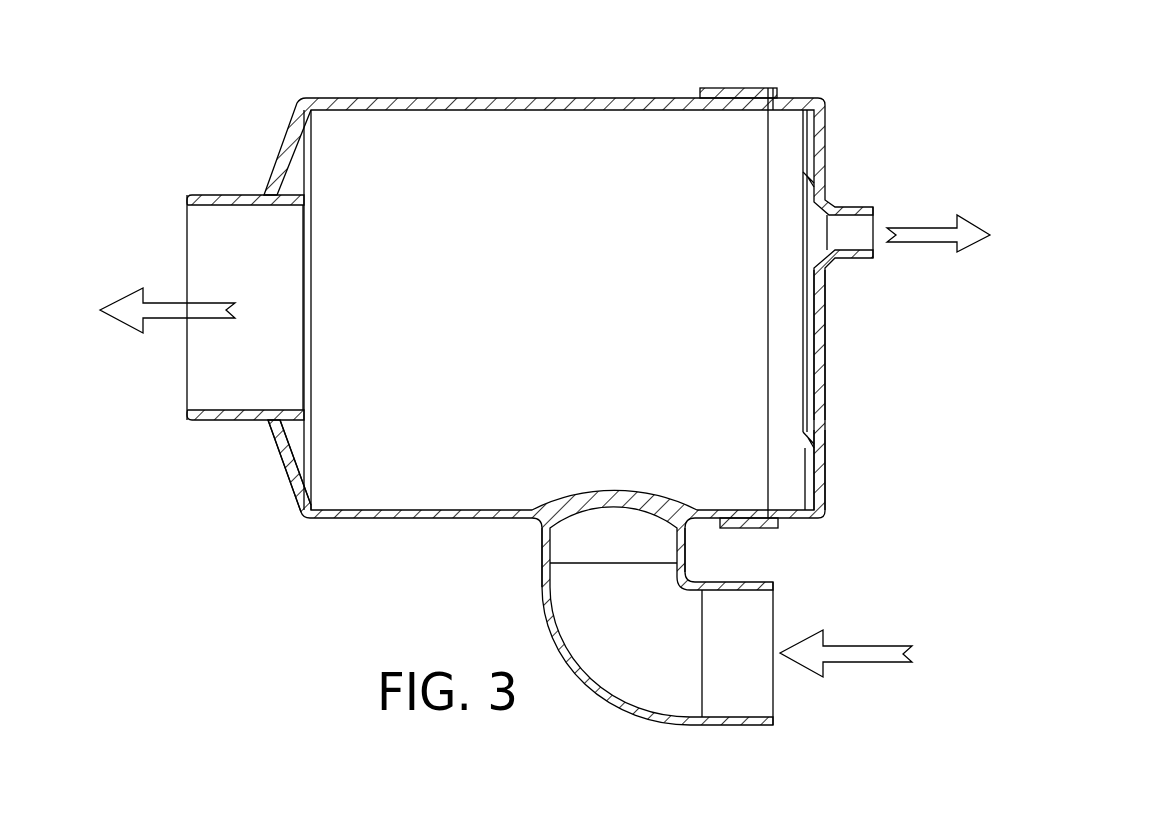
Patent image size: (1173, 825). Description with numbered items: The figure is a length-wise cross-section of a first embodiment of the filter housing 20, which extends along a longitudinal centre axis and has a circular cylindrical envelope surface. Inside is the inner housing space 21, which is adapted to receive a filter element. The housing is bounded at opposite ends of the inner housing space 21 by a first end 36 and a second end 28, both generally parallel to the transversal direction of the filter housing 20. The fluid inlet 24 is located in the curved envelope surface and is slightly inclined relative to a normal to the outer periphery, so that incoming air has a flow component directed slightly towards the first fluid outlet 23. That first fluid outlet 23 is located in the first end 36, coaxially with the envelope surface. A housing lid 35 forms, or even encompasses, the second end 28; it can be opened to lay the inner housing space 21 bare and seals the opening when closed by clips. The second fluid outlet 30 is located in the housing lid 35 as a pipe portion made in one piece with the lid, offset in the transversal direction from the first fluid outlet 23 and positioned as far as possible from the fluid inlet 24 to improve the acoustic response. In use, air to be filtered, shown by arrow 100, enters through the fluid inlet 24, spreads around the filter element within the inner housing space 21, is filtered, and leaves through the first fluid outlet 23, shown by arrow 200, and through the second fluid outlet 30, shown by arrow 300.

The filter housing 20 is at (500, 88).
The inner housing space 21 is at (610, 220).
The first fluid outlet 23 is at (223, 240).
The arrow 200 is at (160, 302).
The first end 36 is at (278, 470).
The second fluid outlet 30 is at (842, 234).
The arrow 300 is at (927, 227).
The housing lid 35 is at (826, 372).
The second end 28 is at (829, 468).
The fluid inlet 24 is at (770, 608).
The arrow 100 is at (868, 645).